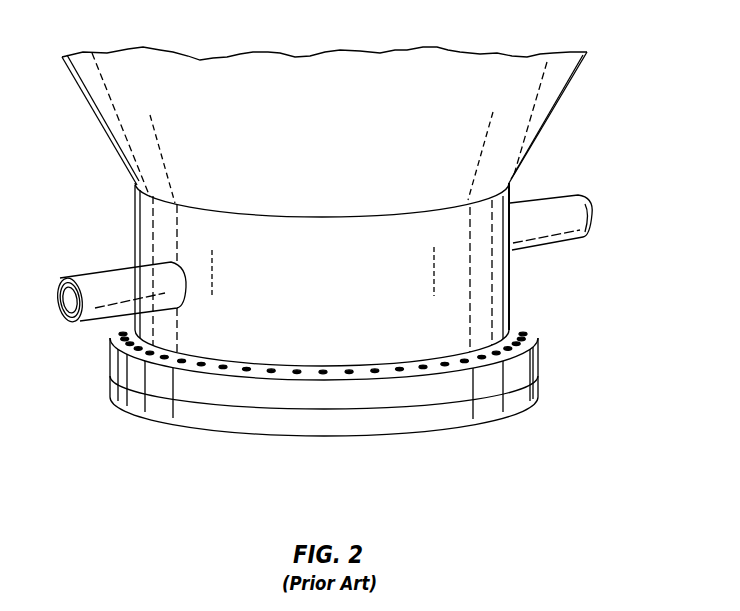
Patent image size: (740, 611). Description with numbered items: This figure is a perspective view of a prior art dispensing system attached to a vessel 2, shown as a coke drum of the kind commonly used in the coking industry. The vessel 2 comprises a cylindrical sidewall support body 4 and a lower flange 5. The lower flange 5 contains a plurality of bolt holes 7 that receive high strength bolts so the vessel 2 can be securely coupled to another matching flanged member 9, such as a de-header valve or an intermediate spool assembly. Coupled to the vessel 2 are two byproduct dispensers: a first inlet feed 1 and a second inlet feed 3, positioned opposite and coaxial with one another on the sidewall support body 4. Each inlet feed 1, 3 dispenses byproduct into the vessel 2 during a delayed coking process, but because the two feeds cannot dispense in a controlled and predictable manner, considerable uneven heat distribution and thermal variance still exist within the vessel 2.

The inlet feed 1 is at (102, 283).
The vessel 2 is at (543, 93).
The inlet feed 3 is at (578, 230).
The cylindrical sidewall support body 4 is at (513, 193).
The lower flange 5 is at (537, 352).
The bolt holes 7 is at (518, 318).
The matching flanged member 9 is at (537, 387).